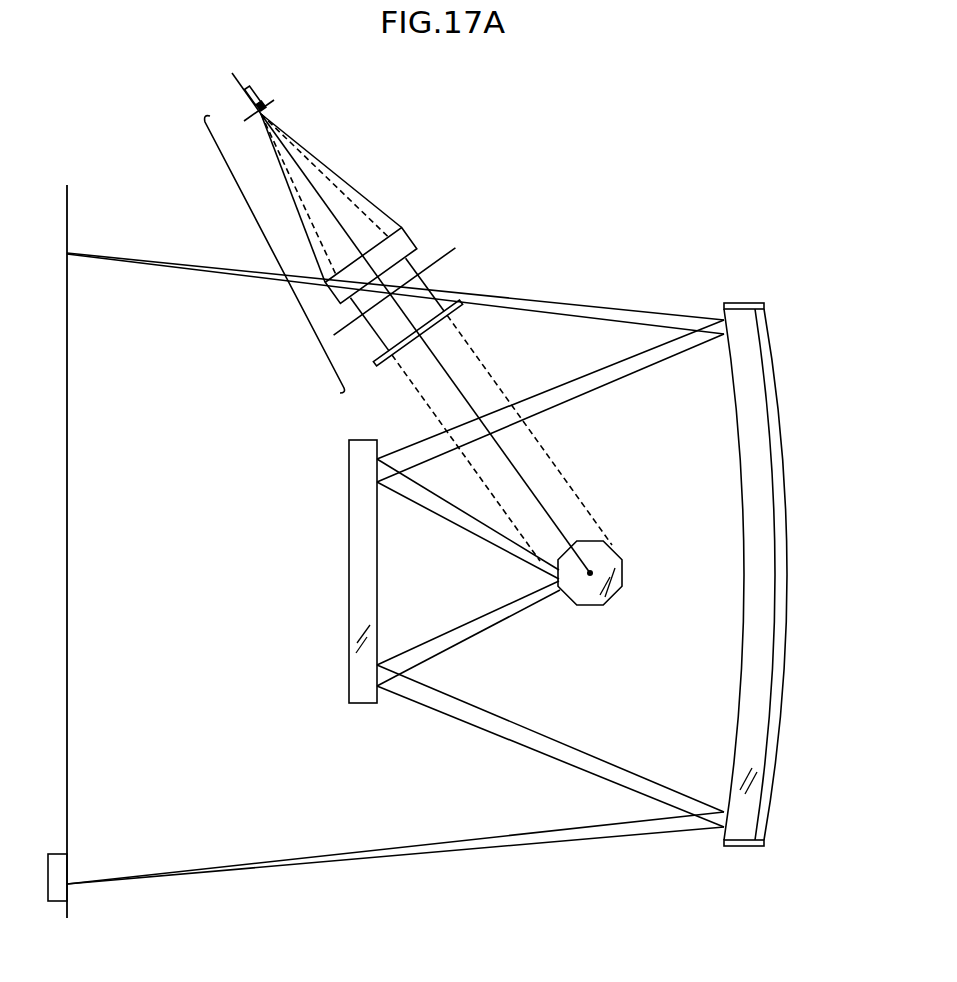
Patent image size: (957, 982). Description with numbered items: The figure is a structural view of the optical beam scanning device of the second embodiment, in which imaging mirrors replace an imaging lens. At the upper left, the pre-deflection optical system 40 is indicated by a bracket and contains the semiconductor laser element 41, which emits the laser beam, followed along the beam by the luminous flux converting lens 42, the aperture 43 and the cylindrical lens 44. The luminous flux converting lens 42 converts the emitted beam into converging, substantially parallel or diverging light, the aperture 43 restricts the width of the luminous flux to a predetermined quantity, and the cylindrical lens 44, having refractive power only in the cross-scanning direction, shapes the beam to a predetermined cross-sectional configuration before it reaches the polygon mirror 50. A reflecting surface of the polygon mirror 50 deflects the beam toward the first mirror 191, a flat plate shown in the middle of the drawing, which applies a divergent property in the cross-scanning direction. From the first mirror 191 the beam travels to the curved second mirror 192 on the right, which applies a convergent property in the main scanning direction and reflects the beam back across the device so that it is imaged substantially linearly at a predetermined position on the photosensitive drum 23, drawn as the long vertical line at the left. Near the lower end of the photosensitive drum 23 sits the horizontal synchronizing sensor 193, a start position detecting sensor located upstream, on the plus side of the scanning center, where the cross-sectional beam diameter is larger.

The photosensitive drum 23 is at (67, 207).
The pre-deflection optical system 40 is at (268, 242).
The semiconductor laser element 41 is at (262, 101).
The luminous flux converting lens 42 is at (413, 232).
The aperture 43 is at (457, 251).
The cylindrical lens 44 is at (463, 305).
The polygon mirror 50 is at (622, 572).
The first mirror 191 is at (350, 638).
The second mirror 192 is at (789, 508).
The horizontal synchronizing sensor 193 is at (48, 885).